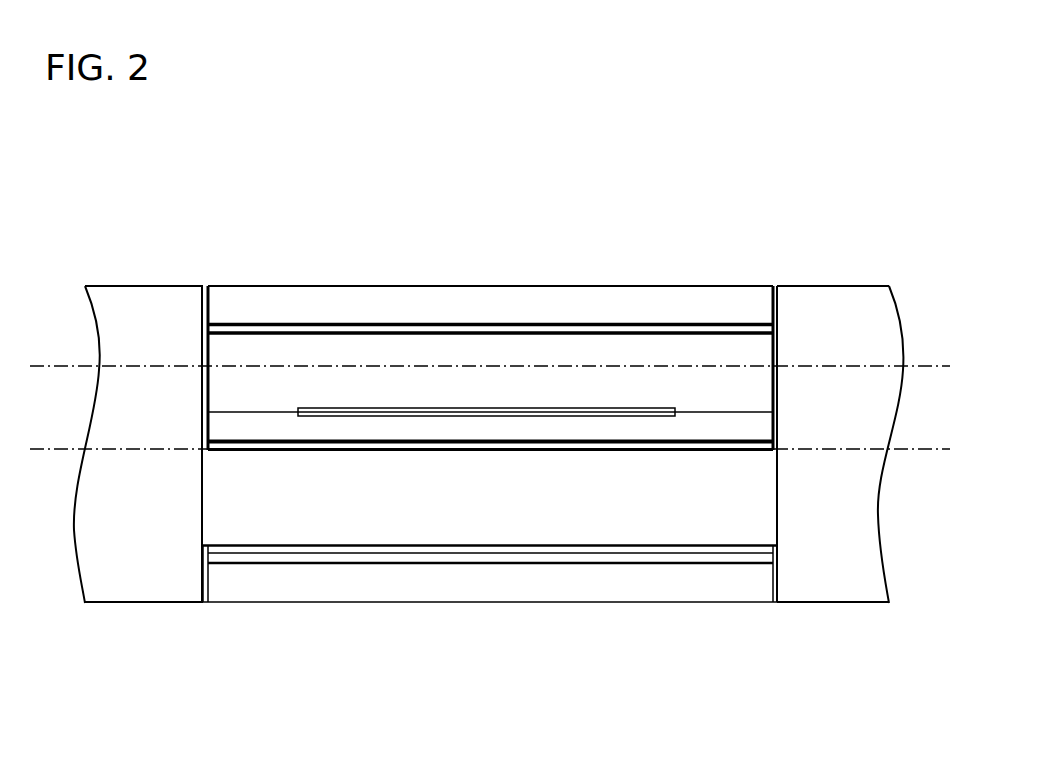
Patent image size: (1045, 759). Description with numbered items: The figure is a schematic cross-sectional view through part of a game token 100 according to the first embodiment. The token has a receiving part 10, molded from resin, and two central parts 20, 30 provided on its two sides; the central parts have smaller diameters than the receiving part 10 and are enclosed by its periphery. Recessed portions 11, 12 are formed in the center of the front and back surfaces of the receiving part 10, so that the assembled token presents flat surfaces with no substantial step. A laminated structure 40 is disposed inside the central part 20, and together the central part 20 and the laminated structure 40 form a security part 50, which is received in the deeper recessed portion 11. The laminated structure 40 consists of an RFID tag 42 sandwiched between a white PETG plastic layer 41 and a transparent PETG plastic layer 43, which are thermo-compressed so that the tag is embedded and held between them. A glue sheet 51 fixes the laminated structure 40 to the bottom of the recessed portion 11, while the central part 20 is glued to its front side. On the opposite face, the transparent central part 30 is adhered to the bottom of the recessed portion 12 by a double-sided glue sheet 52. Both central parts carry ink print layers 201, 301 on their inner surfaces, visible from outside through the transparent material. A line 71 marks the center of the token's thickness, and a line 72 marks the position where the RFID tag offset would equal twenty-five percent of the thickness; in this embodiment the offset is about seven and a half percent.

The game token 100 is at (820, 281).
The receiving part 10 is at (157, 286).
The recessed portion 11 is at (775, 352).
The recessed portion 12 is at (775, 578).
The central part 20 is at (608, 286).
The print layer 201 is at (515, 323).
The central part 30 is at (270, 603).
The print layer 301 is at (372, 564).
The laminated structure 40 is at (200, 337).
The plastic layer 41 is at (432, 331).
The RFID tag 42 is at (343, 408).
The plastic layer 43 is at (727, 410).
The security part 50 is at (783, 437).
The glue sheet 51 is at (262, 442).
The glue sheet 52 is at (552, 558).
The line 71 is at (52, 450).
The line 72 is at (52, 365).